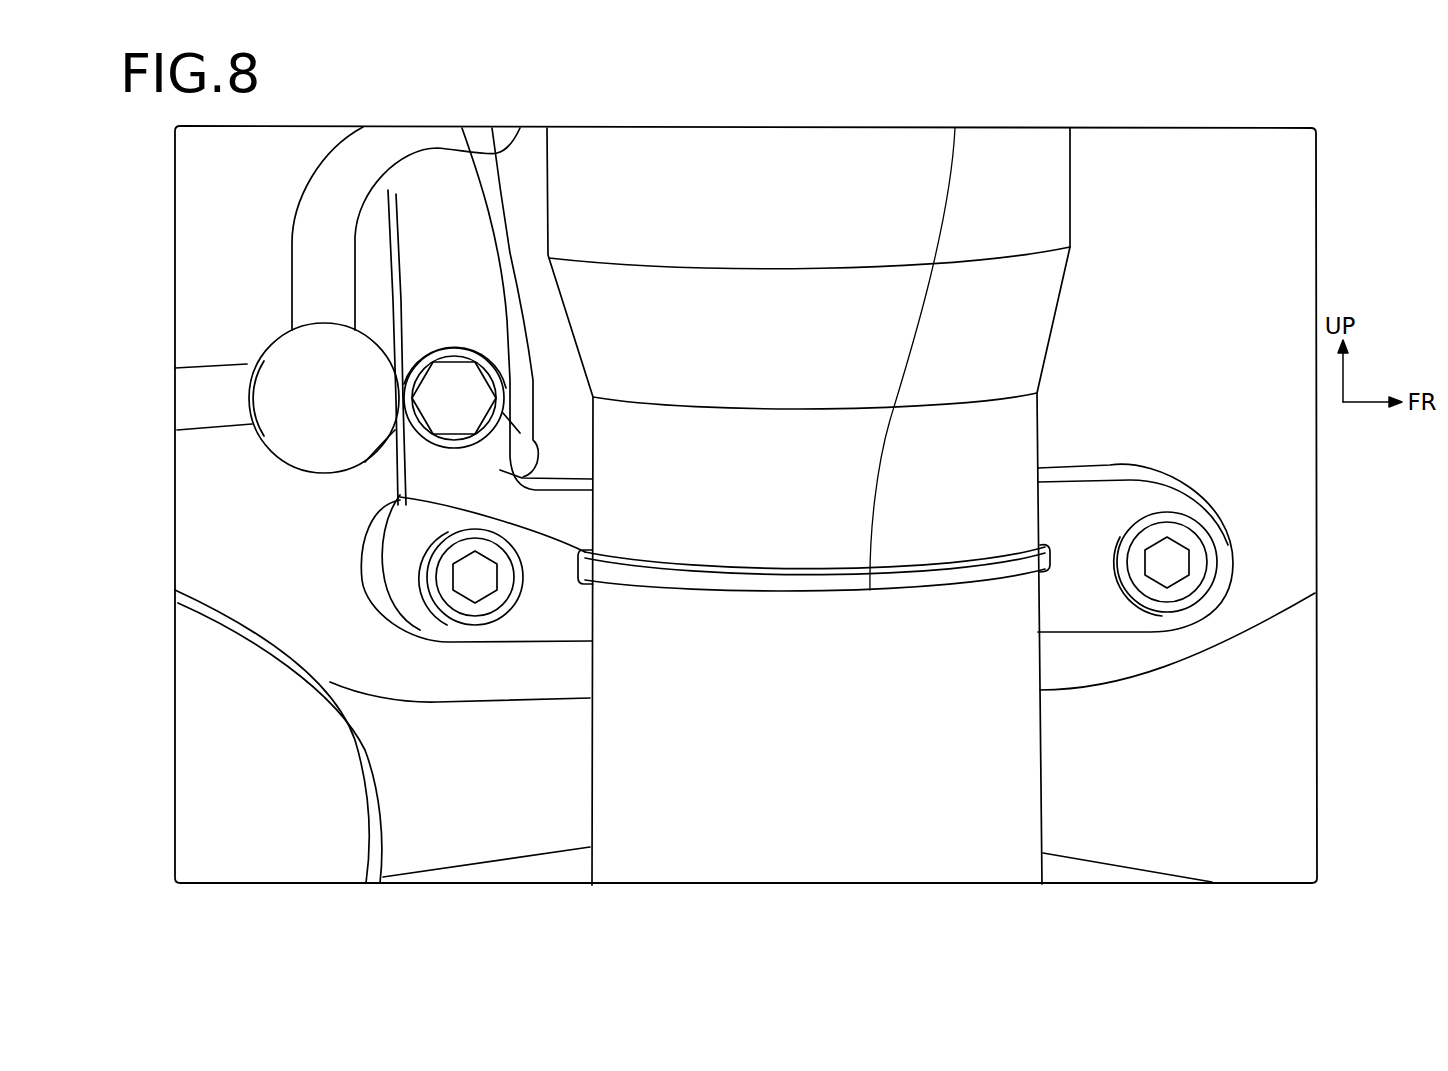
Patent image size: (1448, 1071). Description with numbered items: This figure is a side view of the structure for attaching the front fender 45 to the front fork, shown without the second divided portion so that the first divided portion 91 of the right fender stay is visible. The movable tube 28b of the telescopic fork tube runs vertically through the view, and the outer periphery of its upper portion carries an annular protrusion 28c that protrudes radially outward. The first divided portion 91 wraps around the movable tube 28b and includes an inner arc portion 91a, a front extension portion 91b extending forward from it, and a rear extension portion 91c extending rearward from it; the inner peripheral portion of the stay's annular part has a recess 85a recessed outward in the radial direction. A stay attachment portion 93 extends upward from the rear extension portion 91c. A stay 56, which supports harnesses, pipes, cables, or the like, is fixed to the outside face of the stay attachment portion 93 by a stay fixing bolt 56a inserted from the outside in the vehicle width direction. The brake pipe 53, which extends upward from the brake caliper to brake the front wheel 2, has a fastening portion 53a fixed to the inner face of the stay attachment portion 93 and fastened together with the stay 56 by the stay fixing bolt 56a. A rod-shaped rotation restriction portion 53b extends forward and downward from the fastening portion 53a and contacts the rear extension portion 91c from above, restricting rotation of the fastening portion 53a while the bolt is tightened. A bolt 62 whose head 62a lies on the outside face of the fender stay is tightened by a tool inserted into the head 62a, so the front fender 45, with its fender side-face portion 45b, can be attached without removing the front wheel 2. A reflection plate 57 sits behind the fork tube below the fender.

The front wheel 2 is at (1293, 810).
The movable tube 28b is at (833, 152).
The protrusion 28c is at (955, 128).
The front fender 45 is at (1197, 128).
The fender side-face portion 45b is at (1140, 660).
The brake pipe 53 is at (290, 220).
The fastening portion 53a is at (413, 440).
The rotation restriction portion 53b is at (492, 128).
The stay 56 is at (423, 187).
The stay fixing bolt 56a is at (448, 393).
The reflection plate 57 is at (207, 785).
The bolt 62 is at (445, 570).
The head 62a is at (470, 583).
The recess 85a is at (400, 497).
The first divided portion 91 is at (1102, 633).
The inner arc portion 91a is at (588, 508).
The front extension portion 91b is at (1198, 513).
The rear extension portion 91c is at (400, 540).
The stay attachment portion 93 is at (387, 390).